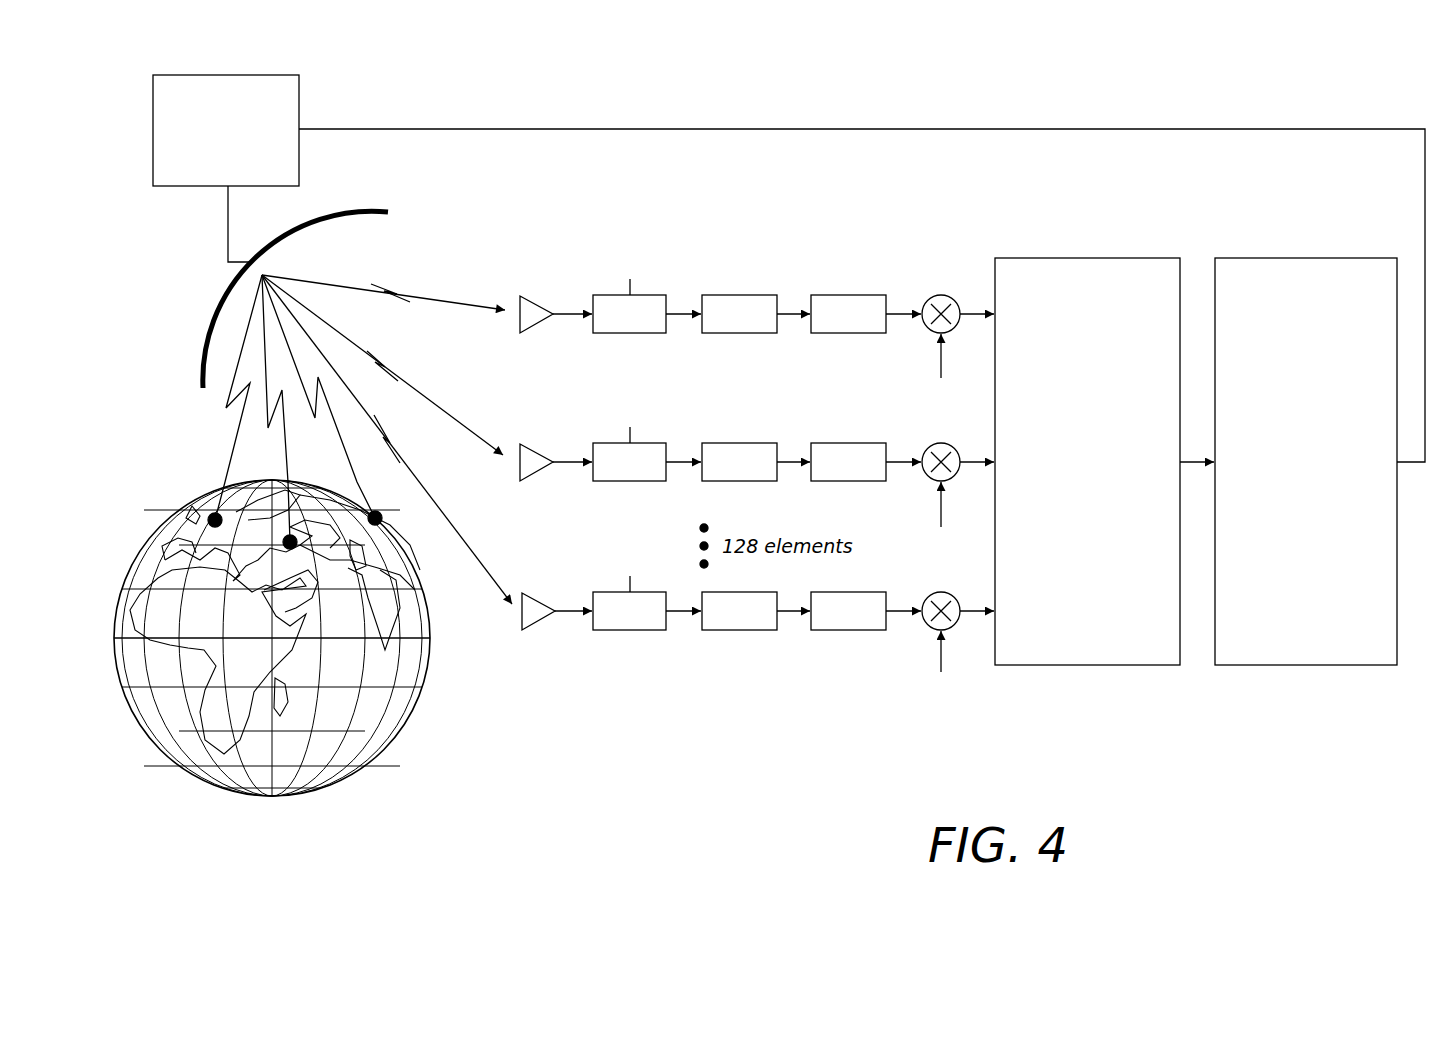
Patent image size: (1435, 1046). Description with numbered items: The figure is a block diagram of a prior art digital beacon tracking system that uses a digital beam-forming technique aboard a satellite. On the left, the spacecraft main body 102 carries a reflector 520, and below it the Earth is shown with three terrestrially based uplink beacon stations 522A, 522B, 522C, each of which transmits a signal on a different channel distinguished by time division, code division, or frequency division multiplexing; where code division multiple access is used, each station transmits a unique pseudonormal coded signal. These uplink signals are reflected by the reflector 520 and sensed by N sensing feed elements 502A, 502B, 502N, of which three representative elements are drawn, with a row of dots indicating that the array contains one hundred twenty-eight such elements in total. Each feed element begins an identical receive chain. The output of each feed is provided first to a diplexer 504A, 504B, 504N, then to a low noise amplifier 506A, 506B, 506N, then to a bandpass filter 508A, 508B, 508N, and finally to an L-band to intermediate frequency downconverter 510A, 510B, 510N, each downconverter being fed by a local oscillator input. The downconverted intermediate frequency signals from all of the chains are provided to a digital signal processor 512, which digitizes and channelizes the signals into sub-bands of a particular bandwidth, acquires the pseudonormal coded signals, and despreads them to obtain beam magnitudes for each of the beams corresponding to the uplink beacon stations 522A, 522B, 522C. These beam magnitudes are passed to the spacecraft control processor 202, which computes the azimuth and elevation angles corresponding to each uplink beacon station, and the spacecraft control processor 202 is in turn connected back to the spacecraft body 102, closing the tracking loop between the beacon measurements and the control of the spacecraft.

The main body 102 is at (299, 150).
The reflector 520 is at (388, 212).
The sensing feed element 502A is at (530, 297).
The sensing feed element 502B is at (533, 446).
The sensing feed element 502N is at (543, 627).
The diplexer 504A is at (653, 295).
The diplexer 504B is at (650, 443).
The diplexer 504N is at (632, 630).
The low noise amplifier 506A is at (733, 295).
The low noise amplifier 506B is at (727, 443).
The low noise amplifier 506N is at (740, 630).
The bandpass filter 508A is at (830, 295).
The bandpass filter 508B is at (860, 443).
The bandpass filter 508N is at (850, 630).
The L-band to intermediate frequency downconverter 510A is at (941, 295).
The L-band to intermediate frequency downconverter 510B is at (960, 430).
The L-band to intermediate frequency downconverter 510N is at (953, 596).
The digital signal processor 512 is at (1085, 258).
The spacecraft control processor 202 is at (1282, 258).
The uplink beacon station 522A is at (215, 520).
The uplink beacon station 522B is at (290, 542).
The uplink beacon station 522C is at (375, 518).